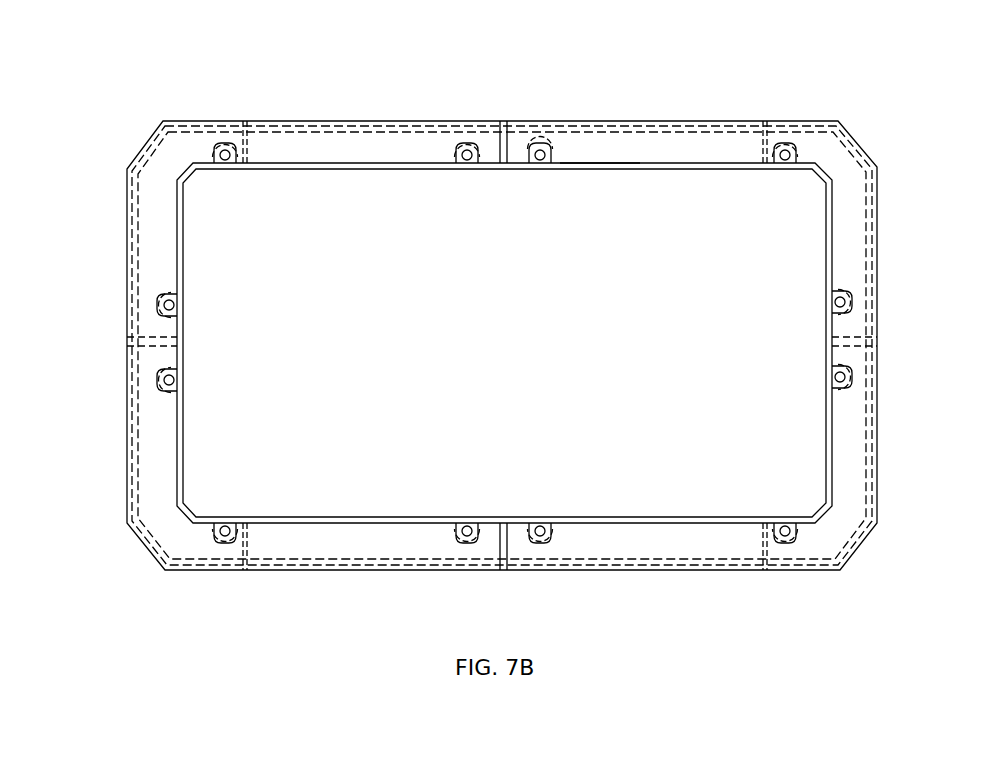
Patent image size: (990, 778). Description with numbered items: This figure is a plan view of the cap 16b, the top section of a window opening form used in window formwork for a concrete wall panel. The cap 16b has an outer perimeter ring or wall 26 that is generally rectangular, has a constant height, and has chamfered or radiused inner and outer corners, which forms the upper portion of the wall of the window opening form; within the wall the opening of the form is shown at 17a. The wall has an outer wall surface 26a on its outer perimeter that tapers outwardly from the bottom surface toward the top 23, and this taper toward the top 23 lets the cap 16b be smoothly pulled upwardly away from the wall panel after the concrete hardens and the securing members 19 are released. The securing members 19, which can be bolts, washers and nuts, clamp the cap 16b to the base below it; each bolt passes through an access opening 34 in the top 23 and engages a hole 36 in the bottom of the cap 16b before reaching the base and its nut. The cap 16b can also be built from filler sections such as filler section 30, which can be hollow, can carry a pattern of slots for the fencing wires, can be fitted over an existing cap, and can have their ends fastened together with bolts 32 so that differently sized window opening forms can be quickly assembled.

The cap 16b is at (877, 273).
The window opening 17a is at (385, 440).
The securing members 19 is at (542, 155).
The top 23 is at (713, 142).
The outer perimeter ring or wall 26 is at (592, 155).
The outer wall surface 26a is at (357, 122).
The filler section 30 is at (283, 147).
The bolts 32 is at (493, 148).
The access opening, slot or hole 34 is at (537, 163).
The hole 36 is at (547, 168).